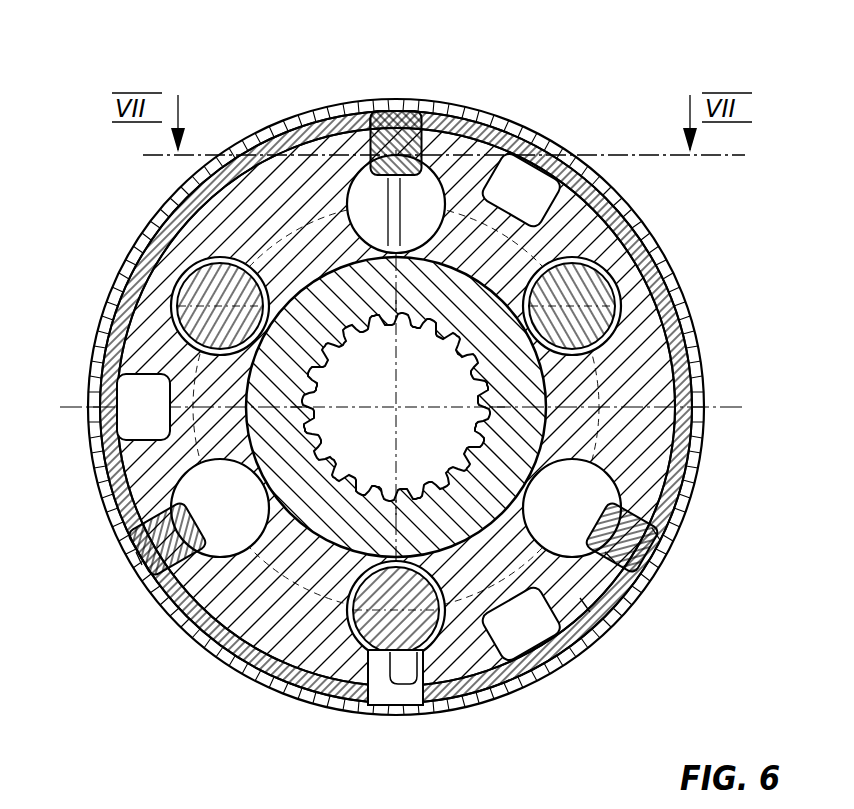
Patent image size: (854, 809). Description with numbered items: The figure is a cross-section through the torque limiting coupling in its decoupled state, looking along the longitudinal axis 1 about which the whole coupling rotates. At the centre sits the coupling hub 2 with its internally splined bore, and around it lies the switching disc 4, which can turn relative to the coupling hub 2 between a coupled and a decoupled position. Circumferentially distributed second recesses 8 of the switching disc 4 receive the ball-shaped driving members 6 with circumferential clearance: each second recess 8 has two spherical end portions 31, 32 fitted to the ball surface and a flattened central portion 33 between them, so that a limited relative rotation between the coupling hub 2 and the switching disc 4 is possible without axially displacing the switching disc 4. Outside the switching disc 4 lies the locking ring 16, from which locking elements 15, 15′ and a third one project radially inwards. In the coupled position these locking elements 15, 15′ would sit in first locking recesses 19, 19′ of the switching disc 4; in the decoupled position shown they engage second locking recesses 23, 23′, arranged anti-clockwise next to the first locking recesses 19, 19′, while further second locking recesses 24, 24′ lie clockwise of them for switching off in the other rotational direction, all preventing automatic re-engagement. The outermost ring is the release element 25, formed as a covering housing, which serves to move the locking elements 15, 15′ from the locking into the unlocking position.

The longitudinal axis 1 is at (421, 370).
The coupling hub 2 is at (337, 307).
The switching disc 4 is at (645, 376).
The driving member 6 is at (368, 705).
The second recess 8 is at (580, 258).
The locking element 15 is at (420, 108).
The locking element 15′ is at (655, 530).
The locking ring 16 is at (283, 128).
The first locking recess 19 is at (512, 168).
The first locking recess 19′ is at (548, 648).
The second locking recess 23 is at (365, 108).
The second locking recess 23′ is at (650, 580).
The second locking recess 24 is at (645, 290).
The second locking recess 24′ is at (424, 700).
The release element 25 is at (464, 108).
The end portion 31 is at (618, 490).
The end portion 32 is at (585, 605).
The central portion 33 is at (612, 560).